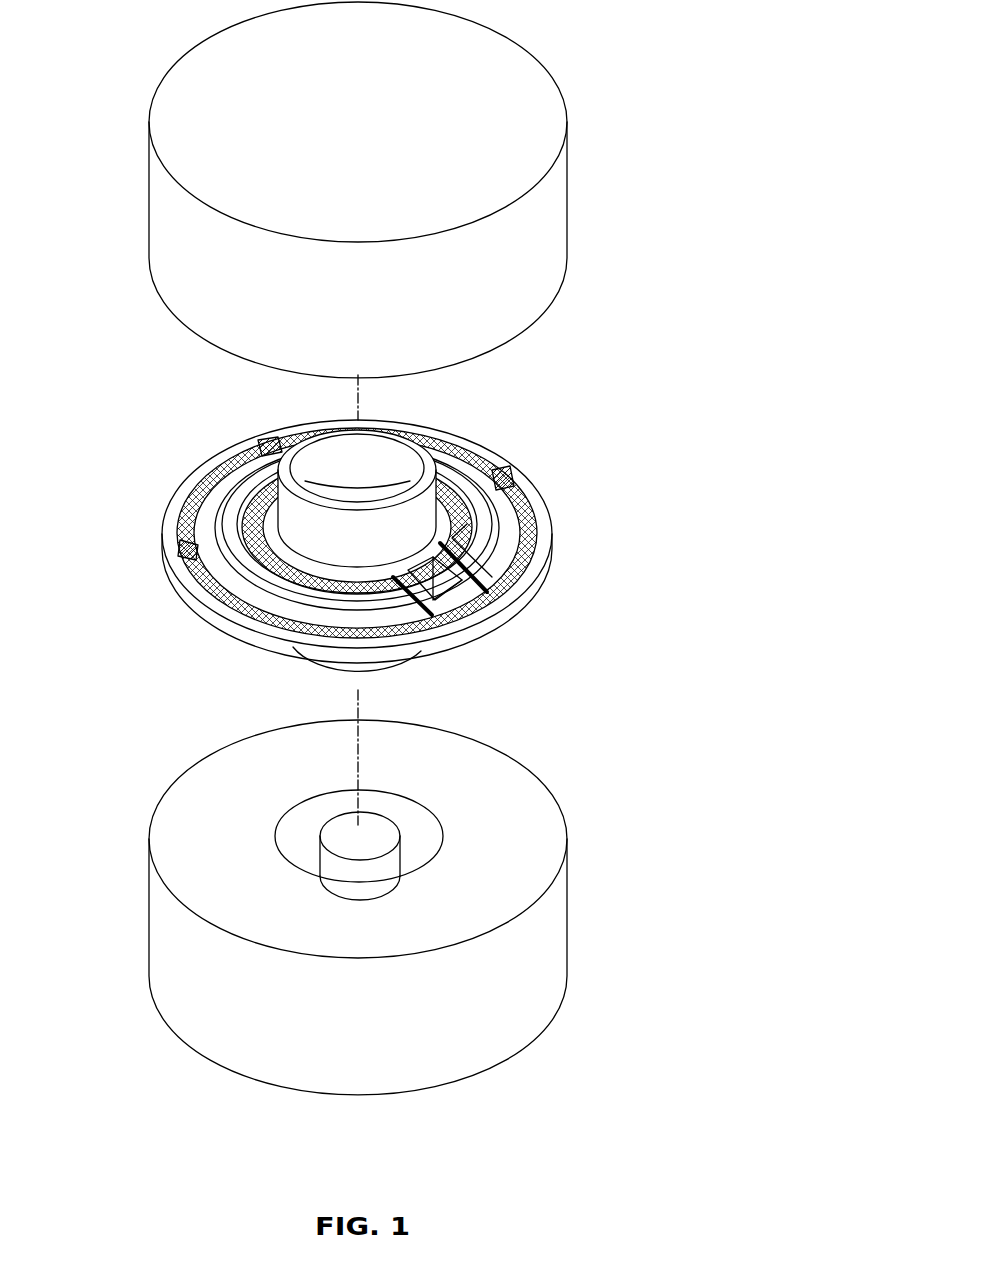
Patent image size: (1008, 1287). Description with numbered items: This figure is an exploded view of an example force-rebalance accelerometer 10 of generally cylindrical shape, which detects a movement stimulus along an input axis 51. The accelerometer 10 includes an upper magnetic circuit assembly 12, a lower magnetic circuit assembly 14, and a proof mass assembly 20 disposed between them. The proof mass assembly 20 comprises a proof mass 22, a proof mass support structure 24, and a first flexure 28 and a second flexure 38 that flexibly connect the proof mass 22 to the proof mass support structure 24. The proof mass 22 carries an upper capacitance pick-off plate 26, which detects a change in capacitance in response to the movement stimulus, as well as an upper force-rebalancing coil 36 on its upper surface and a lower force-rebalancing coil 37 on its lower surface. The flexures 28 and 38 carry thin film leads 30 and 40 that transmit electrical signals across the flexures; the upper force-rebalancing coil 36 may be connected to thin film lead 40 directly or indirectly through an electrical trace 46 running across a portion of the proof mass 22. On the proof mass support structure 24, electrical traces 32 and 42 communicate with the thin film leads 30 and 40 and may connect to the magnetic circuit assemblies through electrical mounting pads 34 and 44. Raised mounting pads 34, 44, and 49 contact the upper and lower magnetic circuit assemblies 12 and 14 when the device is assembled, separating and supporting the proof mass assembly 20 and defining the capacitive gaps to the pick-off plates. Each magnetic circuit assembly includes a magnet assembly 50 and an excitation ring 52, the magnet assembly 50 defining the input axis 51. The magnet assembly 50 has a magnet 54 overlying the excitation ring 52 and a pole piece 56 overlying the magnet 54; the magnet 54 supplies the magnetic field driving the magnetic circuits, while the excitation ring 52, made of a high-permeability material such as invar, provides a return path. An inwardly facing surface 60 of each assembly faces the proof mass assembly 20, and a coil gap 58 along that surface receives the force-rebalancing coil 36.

The accelerometer 10 is at (772, 88).
The upper magnetic circuit assembly 12 is at (605, 183).
The lower magnetic circuit assembly 14 is at (429, 893).
The proof mass assembly 20 is at (508, 417).
The proof mass 22 is at (475, 500).
The proof mass support structure 24 is at (223, 478).
The upper capacitance pick-off plate 26 is at (233, 517).
The first flexure 28 is at (478, 556).
The thin film lead 30 is at (493, 575).
The electrical trace 32 is at (518, 577).
The mounting pad 34 is at (518, 480).
The upper force-rebalancing coil 36 is at (397, 437).
The lower force-rebalancing coil 37 is at (323, 663).
The second flexure 38 is at (408, 595).
The thin film lead 40 is at (430, 605).
The electrical trace 42 is at (207, 577).
The mounting pad 44 is at (185, 552).
The electrical trace 46 is at (398, 577).
The mounting pad 49 is at (260, 443).
The magnet assembly 50 is at (390, 798).
The input axis 51 is at (358, 704).
The excitation ring 52 is at (527, 812).
The magnet 54 is at (390, 875).
The pole piece 56 is at (380, 847).
The coil gap 58 is at (420, 837).
The inwardly facing surface 60 is at (203, 807).